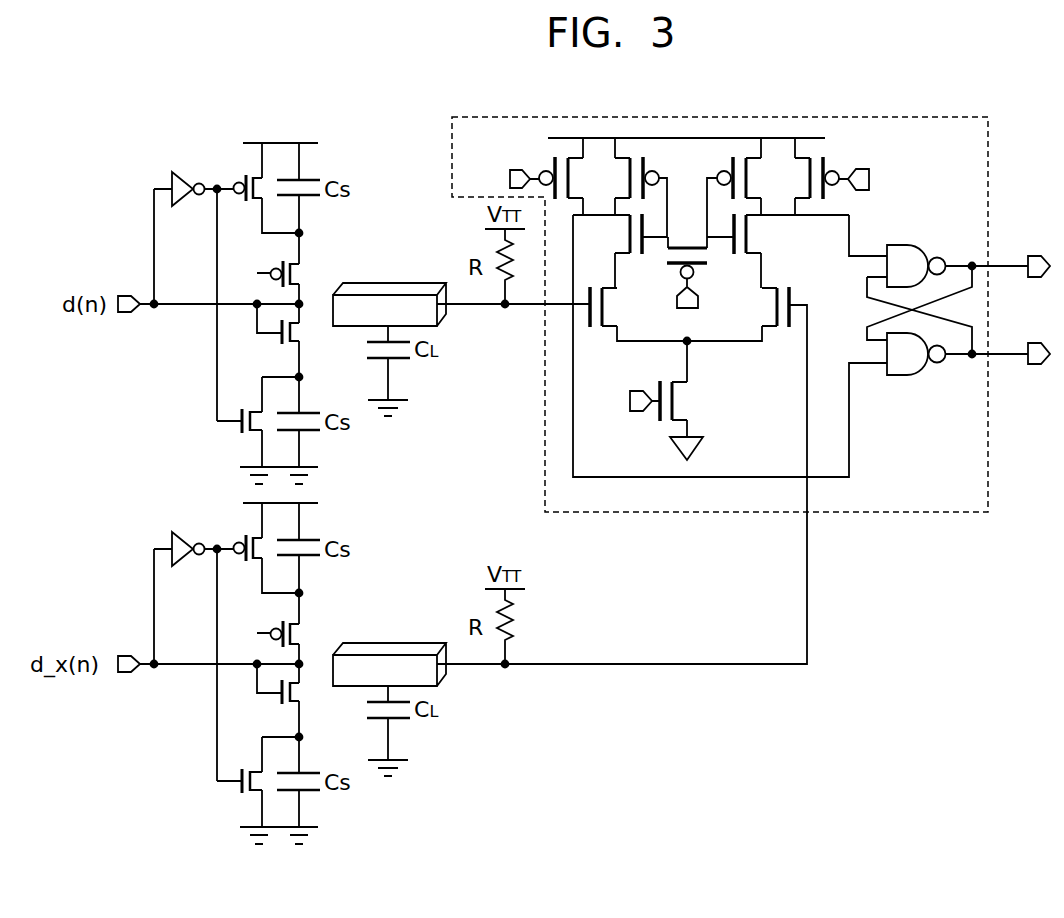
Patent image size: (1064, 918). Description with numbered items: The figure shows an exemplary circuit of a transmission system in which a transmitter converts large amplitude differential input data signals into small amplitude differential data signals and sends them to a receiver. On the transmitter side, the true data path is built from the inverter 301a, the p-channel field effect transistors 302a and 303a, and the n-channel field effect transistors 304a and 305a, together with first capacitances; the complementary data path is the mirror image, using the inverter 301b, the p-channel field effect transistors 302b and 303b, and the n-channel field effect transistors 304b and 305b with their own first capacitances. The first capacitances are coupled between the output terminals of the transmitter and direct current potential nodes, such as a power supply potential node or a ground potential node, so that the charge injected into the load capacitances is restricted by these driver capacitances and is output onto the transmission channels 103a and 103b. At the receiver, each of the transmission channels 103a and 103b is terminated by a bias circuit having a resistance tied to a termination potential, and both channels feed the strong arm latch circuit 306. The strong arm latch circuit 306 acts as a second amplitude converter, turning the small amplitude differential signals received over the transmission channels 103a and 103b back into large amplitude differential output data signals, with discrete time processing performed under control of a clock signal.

The inverter 301a is at (172, 187).
The p-channel field effect transistor 302a is at (247, 172).
The p-channel field effect transistor 303a is at (296, 277).
The n-channel field effect transistor 304a is at (281, 338).
The n-channel field effect transistor 305a is at (250, 435).
The transmission channel 103a is at (430, 283).
The inverter 301b is at (142, 543).
The p-channel field effect transistor 302b is at (240, 546).
The p-channel field effect transistor 303b is at (319, 619).
The n-channel field effect transistor 304b is at (262, 708).
The n-channel field effect transistor 305b is at (208, 797).
The transmission channel 103b is at (389, 638).
The strong arm latch circuit 306 is at (892, 514).